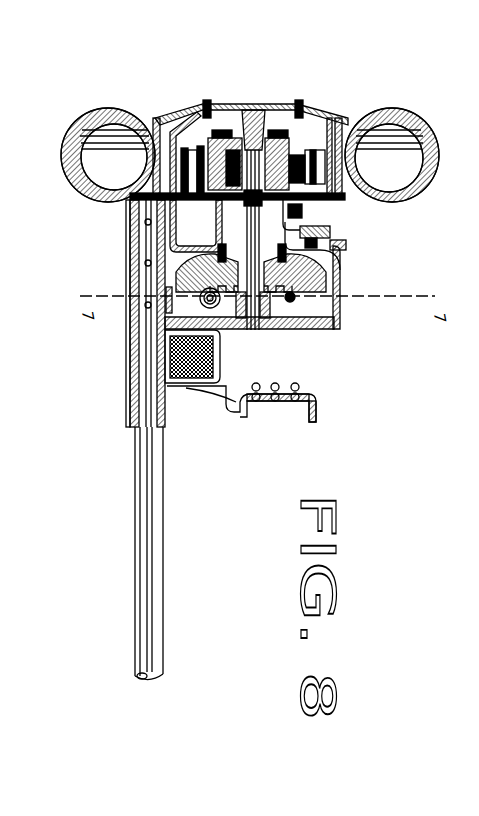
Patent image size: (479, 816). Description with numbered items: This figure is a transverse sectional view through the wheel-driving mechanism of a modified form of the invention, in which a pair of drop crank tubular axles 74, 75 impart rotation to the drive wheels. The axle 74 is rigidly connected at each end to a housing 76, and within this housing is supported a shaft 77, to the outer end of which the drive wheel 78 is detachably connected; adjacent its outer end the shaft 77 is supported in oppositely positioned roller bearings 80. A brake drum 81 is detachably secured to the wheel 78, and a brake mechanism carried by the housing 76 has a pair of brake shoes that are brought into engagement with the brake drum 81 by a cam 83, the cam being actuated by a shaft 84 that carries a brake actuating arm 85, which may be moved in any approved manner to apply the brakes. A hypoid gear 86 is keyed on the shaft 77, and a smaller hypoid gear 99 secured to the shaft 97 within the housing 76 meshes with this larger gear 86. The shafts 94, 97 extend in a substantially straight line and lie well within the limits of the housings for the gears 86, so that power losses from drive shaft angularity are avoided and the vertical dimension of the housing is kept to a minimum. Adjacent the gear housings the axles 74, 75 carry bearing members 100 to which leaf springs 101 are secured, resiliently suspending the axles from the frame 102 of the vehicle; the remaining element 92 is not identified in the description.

The drop crank tubular axle 74 is at (156, 504).
The drop crank tubular axle 75 is at (130, 282).
The housing 76 is at (340, 270).
The shaft 77 is at (296, 218).
The drive wheel 78 is at (337, 120).
The roller bearings 80 is at (231, 196).
The brake drum 81 is at (350, 202).
The cam 83 is at (283, 124).
The shaft 84 is at (318, 208).
The brake actuating arm 85 is at (345, 246).
The hypoid gear 86 is at (333, 320).
The pocket 92 is at (202, 206).
The shaft 94 is at (298, 323).
The shaft 97 is at (264, 331).
The hypoid gear 99 is at (250, 332).
The bearing members 100 is at (124, 384).
The leaf springs 101 is at (216, 356).
The frame 102 is at (256, 408).